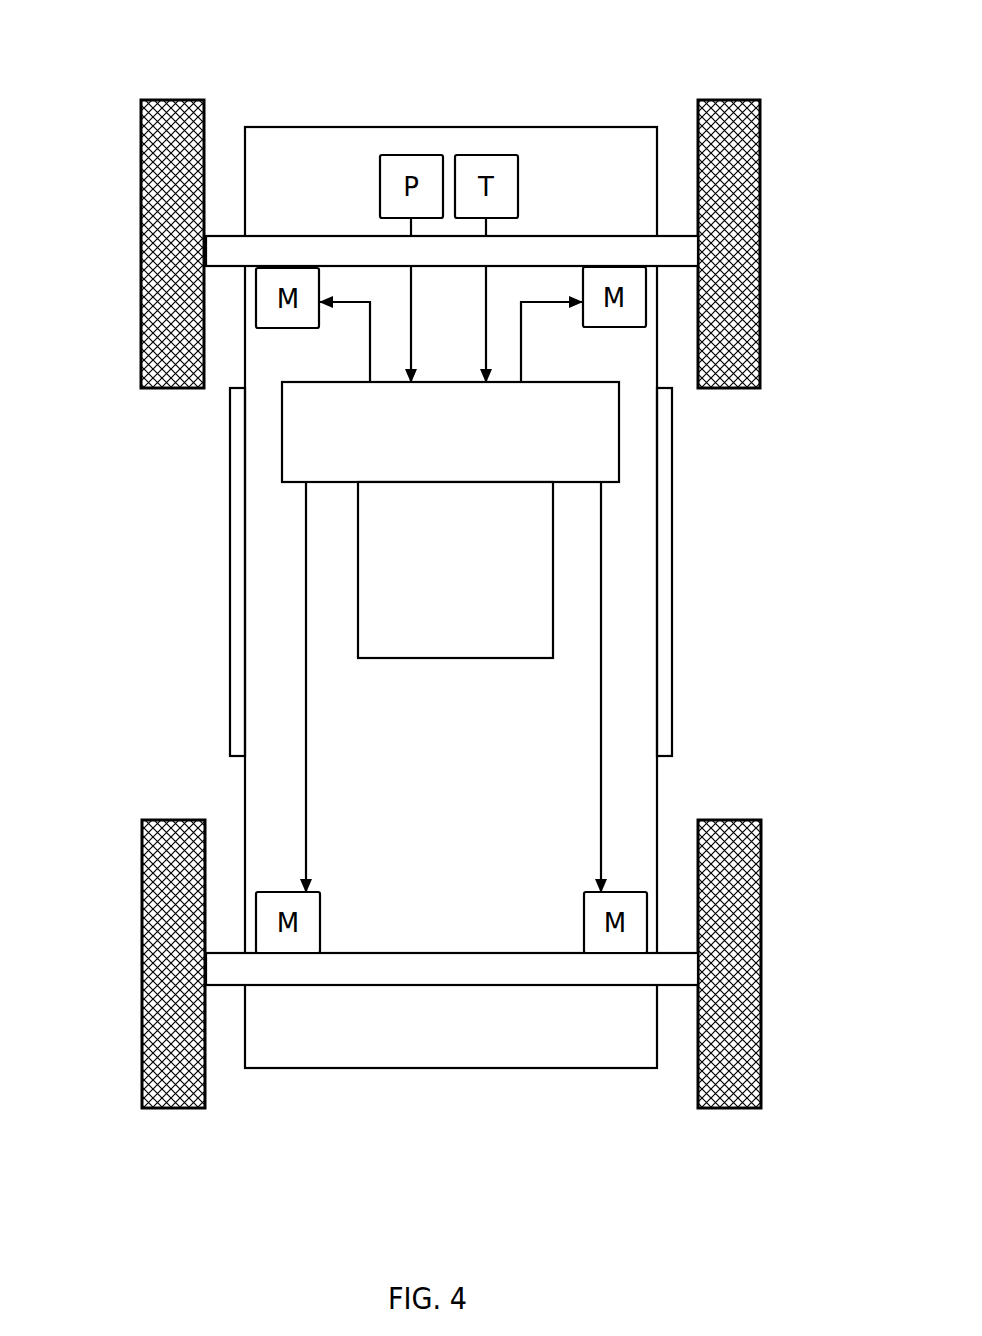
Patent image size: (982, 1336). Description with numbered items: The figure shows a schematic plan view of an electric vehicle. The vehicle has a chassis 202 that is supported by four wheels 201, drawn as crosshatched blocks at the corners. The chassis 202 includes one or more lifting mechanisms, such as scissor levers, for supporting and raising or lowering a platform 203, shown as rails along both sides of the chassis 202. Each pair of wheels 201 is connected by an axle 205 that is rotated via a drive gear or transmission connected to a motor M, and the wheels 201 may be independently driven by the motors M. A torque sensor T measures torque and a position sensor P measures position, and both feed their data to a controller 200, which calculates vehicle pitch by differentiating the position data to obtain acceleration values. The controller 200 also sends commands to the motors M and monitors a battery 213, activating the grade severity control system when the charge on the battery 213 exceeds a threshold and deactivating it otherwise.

The controller 200 is at (450, 432).
The wheels 201 is at (160, 100).
The chassis 202 is at (353, 128).
The platform 203 is at (230, 502).
The axle 205 is at (346, 236).
The battery 213 is at (455, 570).